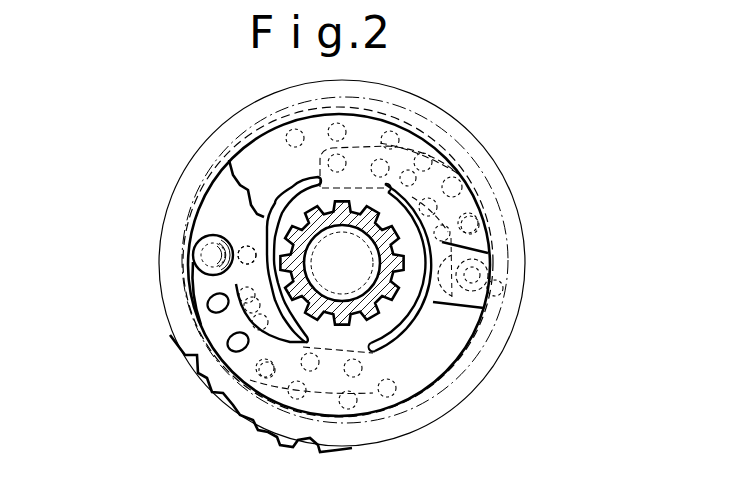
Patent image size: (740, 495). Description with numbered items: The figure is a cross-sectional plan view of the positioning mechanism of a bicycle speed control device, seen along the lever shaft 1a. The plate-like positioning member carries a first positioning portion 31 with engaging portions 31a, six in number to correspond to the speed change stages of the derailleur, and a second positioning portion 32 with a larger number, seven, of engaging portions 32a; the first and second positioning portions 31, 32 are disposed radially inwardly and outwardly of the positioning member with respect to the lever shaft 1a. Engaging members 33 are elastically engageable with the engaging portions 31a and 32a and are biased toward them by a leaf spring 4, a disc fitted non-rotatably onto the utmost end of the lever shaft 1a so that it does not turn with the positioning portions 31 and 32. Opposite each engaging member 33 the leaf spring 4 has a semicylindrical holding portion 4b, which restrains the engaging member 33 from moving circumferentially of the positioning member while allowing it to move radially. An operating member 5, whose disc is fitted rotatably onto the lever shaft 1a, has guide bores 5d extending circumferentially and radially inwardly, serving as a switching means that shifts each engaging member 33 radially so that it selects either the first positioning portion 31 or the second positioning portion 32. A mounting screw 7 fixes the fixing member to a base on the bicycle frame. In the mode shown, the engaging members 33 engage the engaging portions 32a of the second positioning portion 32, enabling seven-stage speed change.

The lever shaft 1a is at (388, 295).
The leaf spring 4 is at (258, 162).
The semicylindrical portion 4b is at (487, 252).
The operating member 5 is at (234, 405).
The guide bore 5d is at (203, 283).
The mounting screw 7 is at (348, 290).
The first positioning portion 31 is at (204, 338).
The engaging portion 31a is at (240, 235).
The second positioning portion 32 is at (203, 286).
The engaging portion 32a is at (195, 248).
The engaging member 33 is at (195, 236).